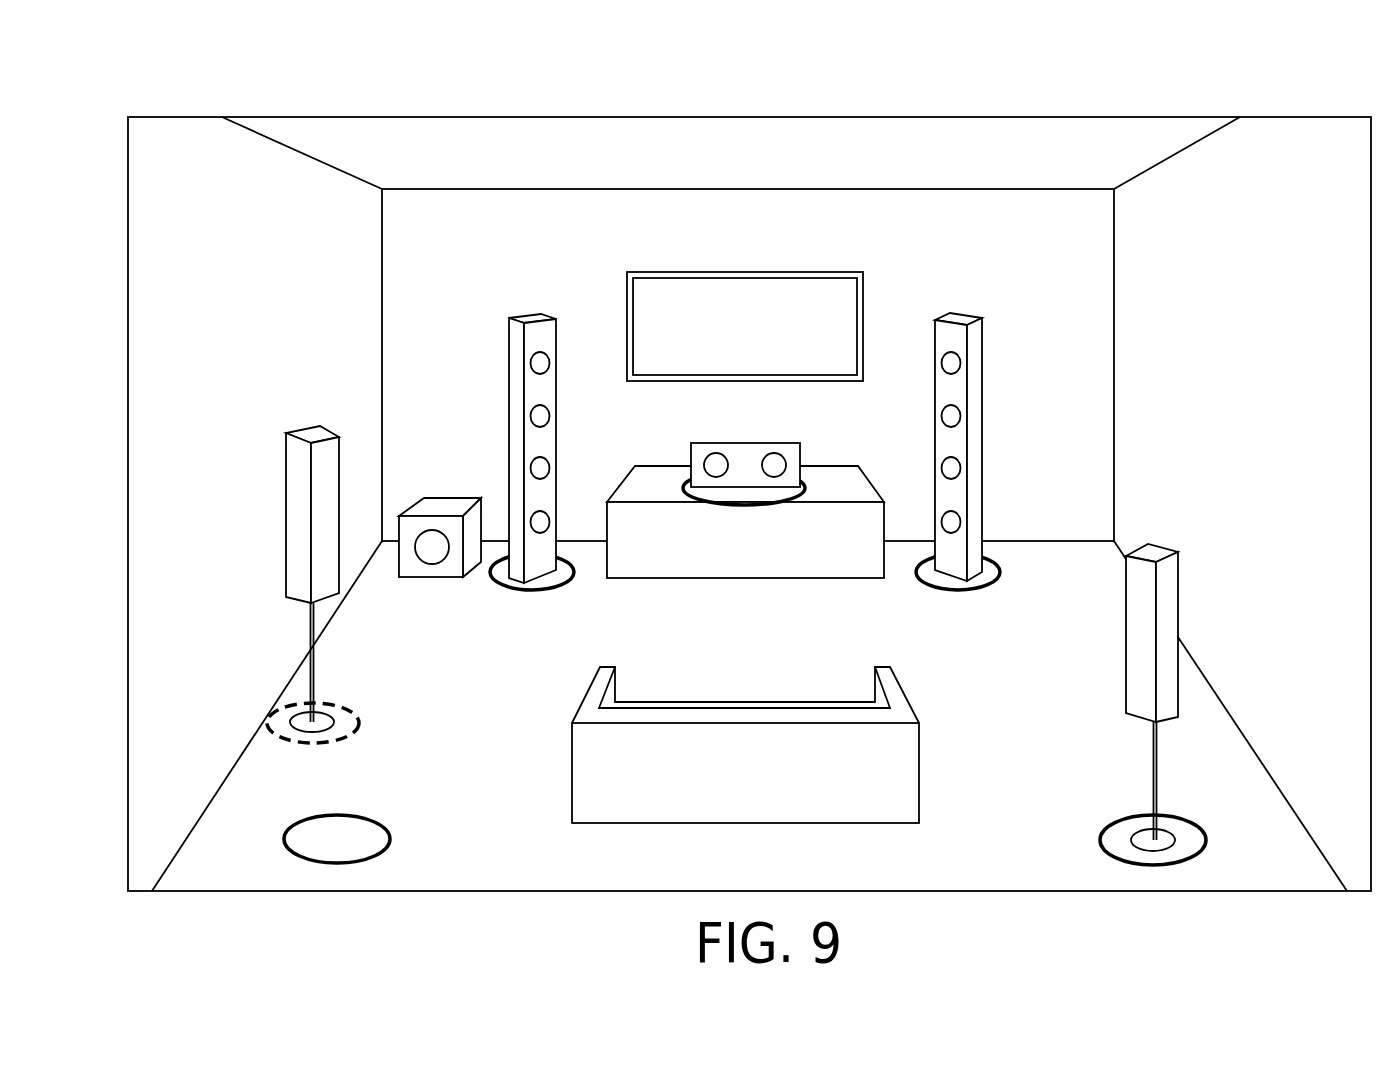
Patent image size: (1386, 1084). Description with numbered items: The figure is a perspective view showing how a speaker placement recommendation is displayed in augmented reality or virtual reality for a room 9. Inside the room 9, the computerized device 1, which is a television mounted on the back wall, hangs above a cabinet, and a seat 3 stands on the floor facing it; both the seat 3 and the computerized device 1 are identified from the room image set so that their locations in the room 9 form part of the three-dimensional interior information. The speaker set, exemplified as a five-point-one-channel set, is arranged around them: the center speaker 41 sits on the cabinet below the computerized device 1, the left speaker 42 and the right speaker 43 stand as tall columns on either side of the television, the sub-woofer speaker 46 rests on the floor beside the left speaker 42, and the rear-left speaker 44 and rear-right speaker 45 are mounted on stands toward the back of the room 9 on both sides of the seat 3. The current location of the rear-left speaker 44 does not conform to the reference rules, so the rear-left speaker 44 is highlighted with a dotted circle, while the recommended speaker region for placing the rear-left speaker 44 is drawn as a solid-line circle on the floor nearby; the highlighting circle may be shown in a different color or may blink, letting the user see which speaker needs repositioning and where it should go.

The room 9 is at (177, 102).
The computerized device 1 is at (865, 325).
The seat 3 is at (919, 773).
The center speaker 41 is at (746, 443).
The left speaker 42 is at (538, 318).
The right speaker 43 is at (953, 318).
The rear-left speaker 44 is at (311, 430).
The rear-right speaker 45 is at (1158, 548).
The sub-woofer speaker 46 is at (447, 504).